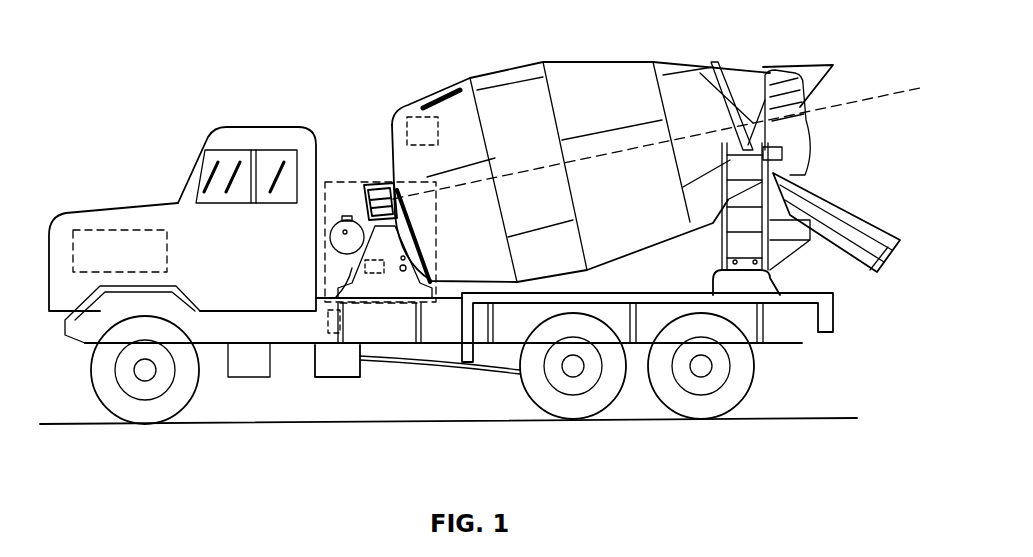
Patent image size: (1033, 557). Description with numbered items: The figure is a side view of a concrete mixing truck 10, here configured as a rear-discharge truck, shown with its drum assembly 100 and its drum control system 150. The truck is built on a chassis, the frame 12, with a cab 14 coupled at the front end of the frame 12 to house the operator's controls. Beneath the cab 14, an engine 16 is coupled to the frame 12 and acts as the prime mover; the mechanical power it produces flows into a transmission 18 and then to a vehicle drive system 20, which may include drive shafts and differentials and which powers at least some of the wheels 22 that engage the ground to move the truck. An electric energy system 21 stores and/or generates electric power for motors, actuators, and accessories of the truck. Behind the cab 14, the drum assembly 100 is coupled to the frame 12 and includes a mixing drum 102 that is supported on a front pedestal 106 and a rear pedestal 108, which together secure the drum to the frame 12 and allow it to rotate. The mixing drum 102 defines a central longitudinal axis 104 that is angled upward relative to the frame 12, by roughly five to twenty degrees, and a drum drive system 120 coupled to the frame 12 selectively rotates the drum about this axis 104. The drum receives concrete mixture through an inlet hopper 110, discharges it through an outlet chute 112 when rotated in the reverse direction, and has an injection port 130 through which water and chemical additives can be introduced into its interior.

The concrete mixing truck 10 is at (150, 92).
The frame 12 is at (383, 330).
The cab 14 is at (163, 210).
The engine 16 is at (93, 238).
The transmission 18 is at (349, 380).
The vehicle drive system 20 is at (521, 372).
The electric energy system 21 is at (330, 335).
The wheels 22 is at (100, 385).
The drum assembly 100 is at (520, 53).
The mixing drum 102 is at (623, 72).
The axis 104 is at (870, 98).
The front pedestal 106 is at (400, 258).
The rear pedestal 108 is at (714, 274).
The hopper 110 is at (810, 67).
The chute 112 is at (873, 222).
The drum drive system 120 is at (362, 182).
The injection port 130 is at (420, 115).
The drum control system 150 is at (365, 265).